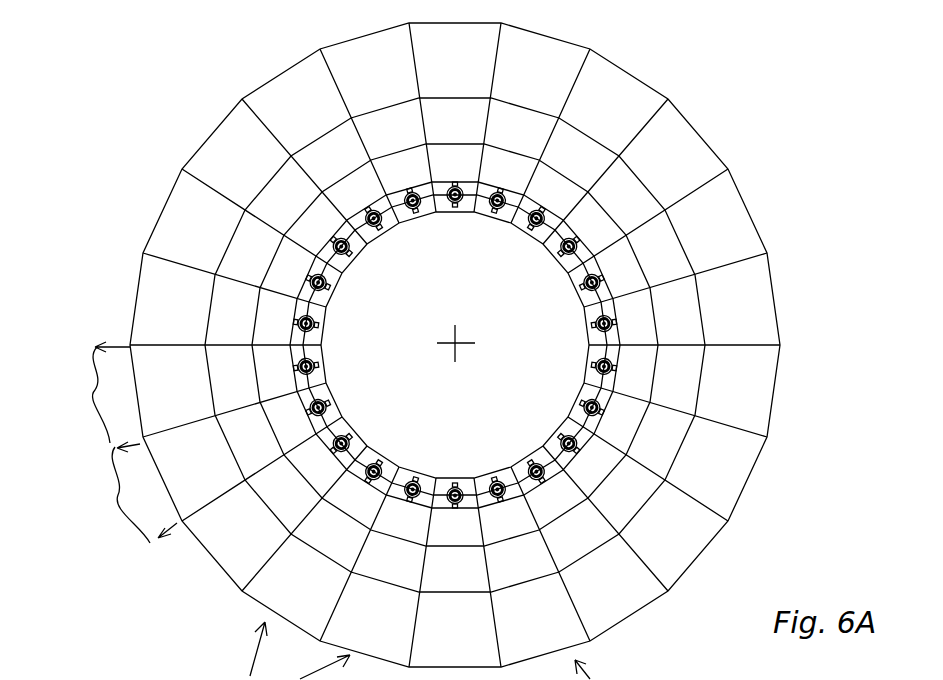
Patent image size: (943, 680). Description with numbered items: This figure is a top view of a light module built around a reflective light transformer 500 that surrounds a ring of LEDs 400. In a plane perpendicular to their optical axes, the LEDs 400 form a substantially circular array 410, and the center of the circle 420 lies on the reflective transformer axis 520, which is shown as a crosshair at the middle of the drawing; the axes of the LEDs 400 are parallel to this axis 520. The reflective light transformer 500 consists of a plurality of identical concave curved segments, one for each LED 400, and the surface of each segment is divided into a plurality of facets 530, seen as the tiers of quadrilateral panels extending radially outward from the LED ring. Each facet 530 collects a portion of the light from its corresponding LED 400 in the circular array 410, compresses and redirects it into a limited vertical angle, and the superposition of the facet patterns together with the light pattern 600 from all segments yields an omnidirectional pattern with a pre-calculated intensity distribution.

The reflective light transformer 500 is at (667, 61).
The facets 530 is at (603, 263).
The circular array 410 is at (437, 200).
The LEDs 400 is at (356, 419).
The center of the circle 420 is at (499, 335).
The reflective transformer axis 520 is at (473, 338).
The light pattern 600 is at (87, 408).